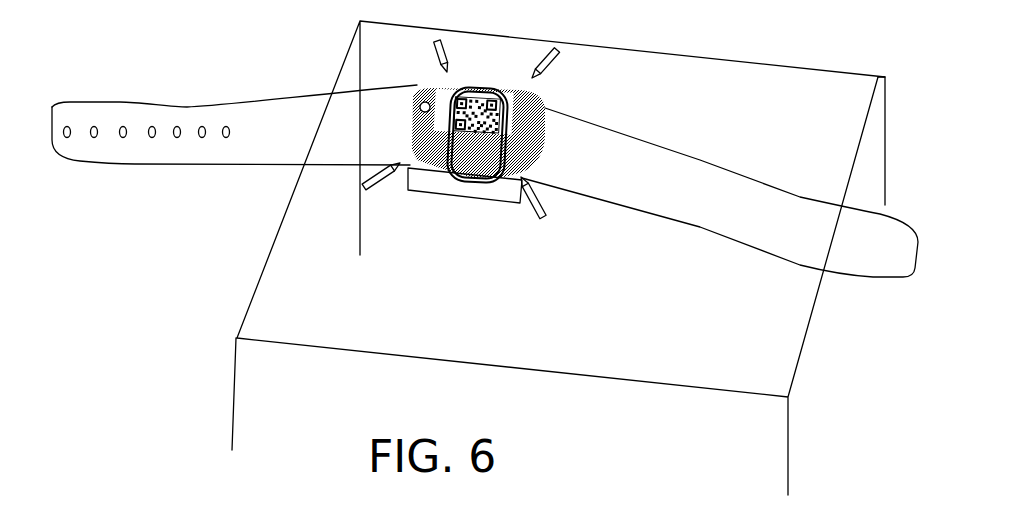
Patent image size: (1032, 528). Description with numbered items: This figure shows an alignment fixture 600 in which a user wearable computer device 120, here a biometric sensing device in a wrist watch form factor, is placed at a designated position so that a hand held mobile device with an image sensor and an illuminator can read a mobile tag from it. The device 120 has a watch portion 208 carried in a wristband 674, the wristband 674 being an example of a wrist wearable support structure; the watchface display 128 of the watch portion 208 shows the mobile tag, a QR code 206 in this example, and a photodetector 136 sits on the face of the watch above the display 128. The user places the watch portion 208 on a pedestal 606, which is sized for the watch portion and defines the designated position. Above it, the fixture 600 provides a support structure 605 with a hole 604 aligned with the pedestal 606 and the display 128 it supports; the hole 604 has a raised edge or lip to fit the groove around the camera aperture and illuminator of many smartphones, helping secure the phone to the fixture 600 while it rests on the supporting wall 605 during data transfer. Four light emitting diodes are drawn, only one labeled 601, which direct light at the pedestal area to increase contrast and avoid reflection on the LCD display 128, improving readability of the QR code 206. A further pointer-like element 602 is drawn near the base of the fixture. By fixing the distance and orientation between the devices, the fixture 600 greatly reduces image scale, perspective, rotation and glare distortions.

The alignment fixture 600 is at (636, 48).
The support structure 605 is at (792, 95).
The wristband 674 is at (207, 102).
The user wearable computer device 120 is at (428, 92).
The photodetector 136 is at (419, 103).
The QR code 206 is at (458, 113).
The watchface display 128 is at (513, 115).
The watch portion 208 is at (533, 142).
The light emitting diode 601 is at (445, 44).
The pointer stylus 602 is at (438, 163).
The hole 604 is at (452, 178).
The designated position / pedestal 606 is at (498, 193).